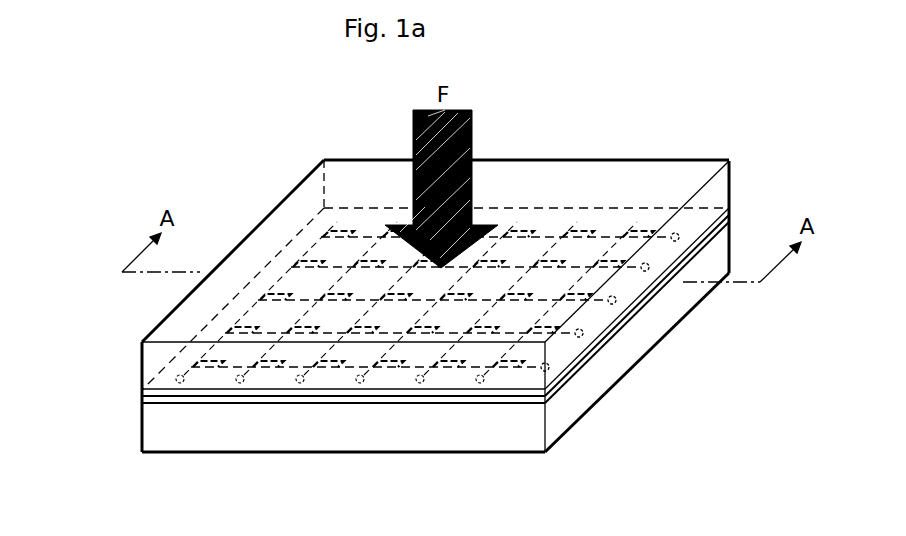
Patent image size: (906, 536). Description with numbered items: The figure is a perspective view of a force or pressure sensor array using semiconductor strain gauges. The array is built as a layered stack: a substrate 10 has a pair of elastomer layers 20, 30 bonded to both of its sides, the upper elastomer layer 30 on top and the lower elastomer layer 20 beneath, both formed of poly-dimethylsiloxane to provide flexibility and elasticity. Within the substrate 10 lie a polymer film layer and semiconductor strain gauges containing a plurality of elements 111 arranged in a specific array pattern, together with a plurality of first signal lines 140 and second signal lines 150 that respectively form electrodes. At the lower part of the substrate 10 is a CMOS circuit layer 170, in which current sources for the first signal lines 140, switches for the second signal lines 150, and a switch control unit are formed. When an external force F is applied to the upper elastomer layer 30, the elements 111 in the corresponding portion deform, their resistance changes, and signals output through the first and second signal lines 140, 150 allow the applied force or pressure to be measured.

The upper elastomer layer 30 is at (150, 353).
The substrate 10 is at (156, 388).
The CMOS circuit layer 170 is at (146, 400).
The lower elastomer layer 20 is at (152, 428).
The first signal lines 140 is at (248, 373).
The second signal lines 150 is at (353, 368).
The elements 111 is at (447, 366).